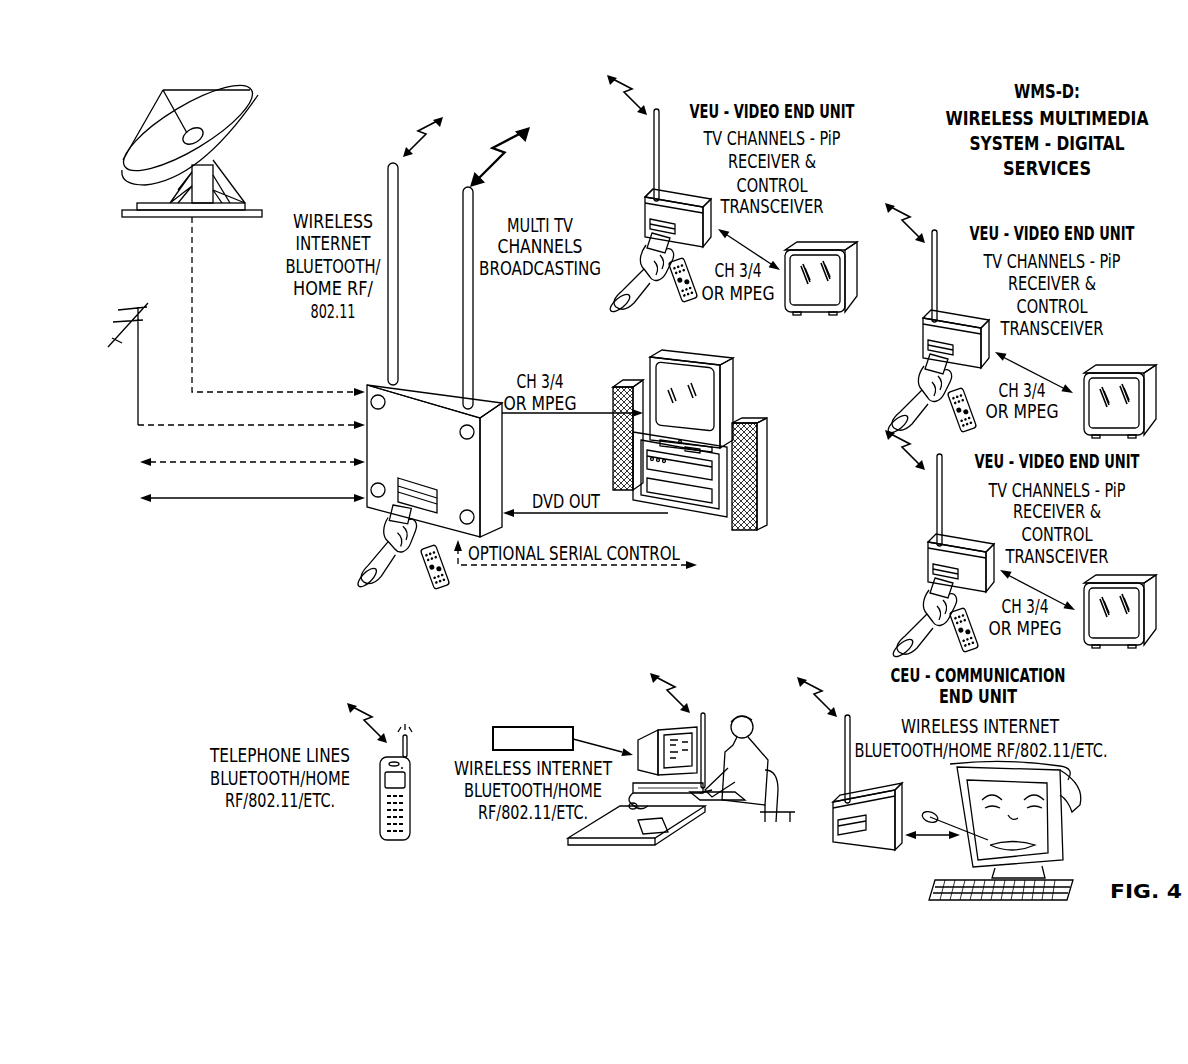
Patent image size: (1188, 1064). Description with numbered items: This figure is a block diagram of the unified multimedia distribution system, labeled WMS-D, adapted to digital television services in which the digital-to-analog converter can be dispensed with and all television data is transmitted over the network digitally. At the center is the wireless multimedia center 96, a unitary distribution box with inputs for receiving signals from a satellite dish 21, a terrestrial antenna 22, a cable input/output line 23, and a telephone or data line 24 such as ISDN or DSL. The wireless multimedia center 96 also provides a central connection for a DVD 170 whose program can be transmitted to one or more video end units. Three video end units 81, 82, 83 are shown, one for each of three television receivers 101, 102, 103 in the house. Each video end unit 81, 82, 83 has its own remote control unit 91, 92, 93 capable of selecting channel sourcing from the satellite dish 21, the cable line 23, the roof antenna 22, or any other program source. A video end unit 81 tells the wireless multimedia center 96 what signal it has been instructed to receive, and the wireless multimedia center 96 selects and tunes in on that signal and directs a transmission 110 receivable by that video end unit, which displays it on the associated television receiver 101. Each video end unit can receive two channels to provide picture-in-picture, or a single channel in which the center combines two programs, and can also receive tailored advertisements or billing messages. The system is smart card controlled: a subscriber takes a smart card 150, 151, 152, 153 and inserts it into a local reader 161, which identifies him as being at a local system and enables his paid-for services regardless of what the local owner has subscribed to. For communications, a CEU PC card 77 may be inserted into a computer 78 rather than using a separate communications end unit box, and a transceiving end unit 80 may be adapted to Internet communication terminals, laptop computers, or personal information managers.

The satellite dish 21 is at (250, 96).
The terrestrial antenna 22 is at (147, 306).
The cable input/output line 23 is at (172, 461).
The telephone or data line 24 is at (185, 499).
The wireless multimedia center 96 is at (367, 384).
The transmission 110 is at (481, 159).
The smart card 150 is at (385, 525).
The DVD 170 is at (620, 515).
The local reader 161 is at (652, 192).
The smart card 151 is at (640, 237).
The video end unit 81 is at (673, 212).
The television receiver 101 is at (822, 250).
The remote control unit 91 is at (689, 302).
The video end unit 82 is at (951, 333).
The smart card 152 is at (928, 362).
The television receiver 102 is at (1125, 375).
The remote control unit 92 is at (968, 425).
The video end unit 83 is at (956, 557).
The smart card 153 is at (932, 583).
The television receiver 103 is at (1125, 588).
The remote control unit 93 is at (975, 645).
The CEU PC card 77 is at (545, 726).
The computer 78 is at (665, 730).
The transceiving end unit 80 is at (877, 841).